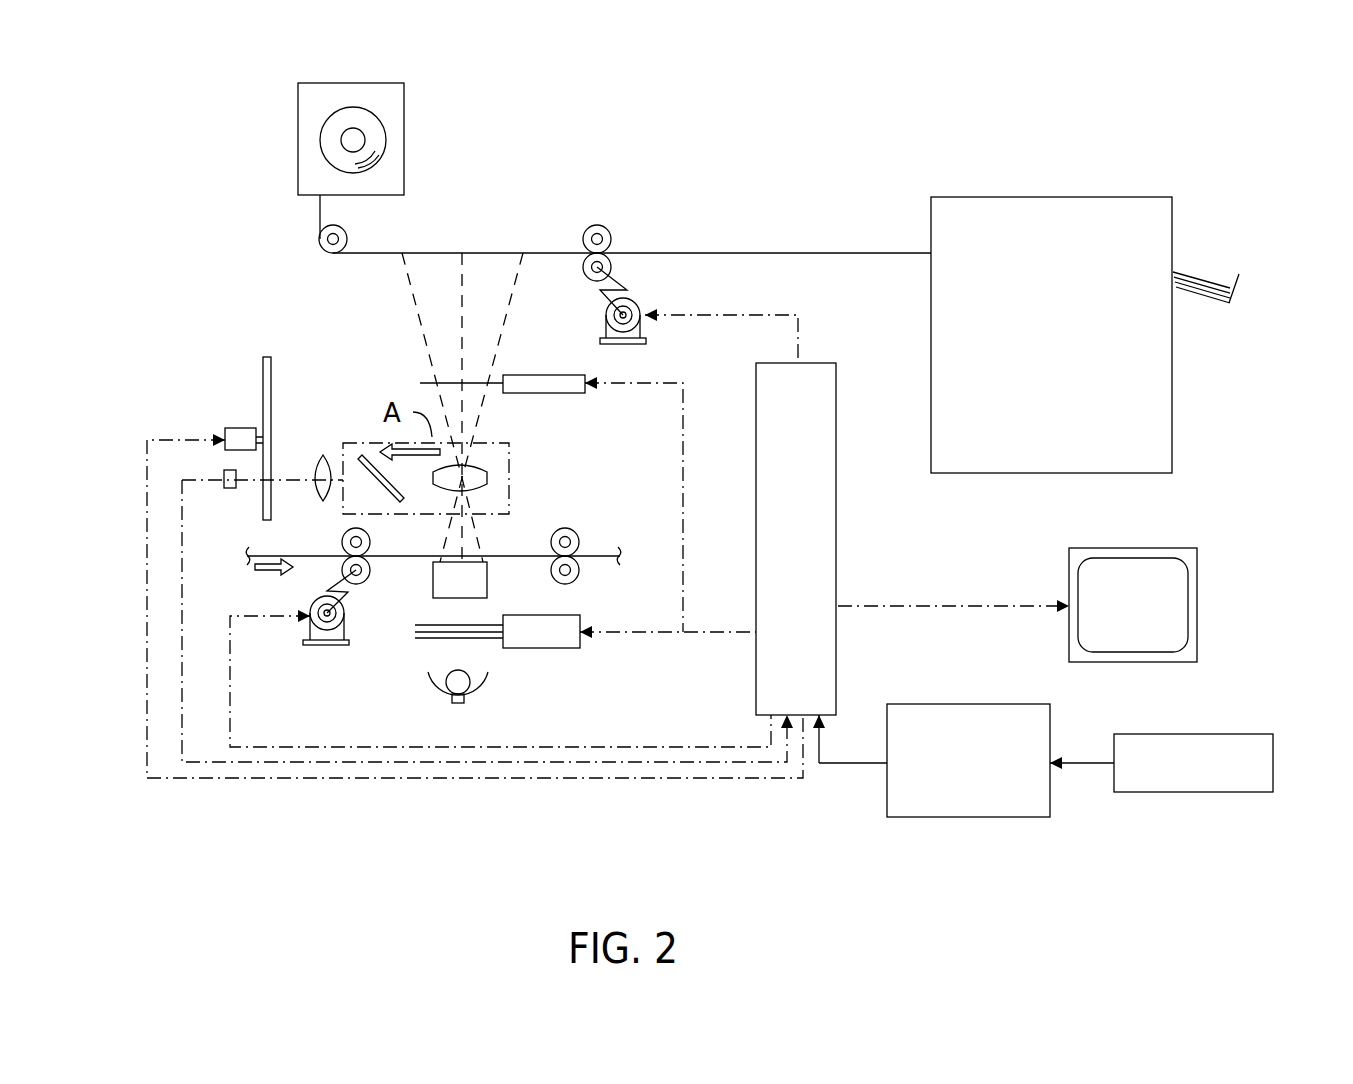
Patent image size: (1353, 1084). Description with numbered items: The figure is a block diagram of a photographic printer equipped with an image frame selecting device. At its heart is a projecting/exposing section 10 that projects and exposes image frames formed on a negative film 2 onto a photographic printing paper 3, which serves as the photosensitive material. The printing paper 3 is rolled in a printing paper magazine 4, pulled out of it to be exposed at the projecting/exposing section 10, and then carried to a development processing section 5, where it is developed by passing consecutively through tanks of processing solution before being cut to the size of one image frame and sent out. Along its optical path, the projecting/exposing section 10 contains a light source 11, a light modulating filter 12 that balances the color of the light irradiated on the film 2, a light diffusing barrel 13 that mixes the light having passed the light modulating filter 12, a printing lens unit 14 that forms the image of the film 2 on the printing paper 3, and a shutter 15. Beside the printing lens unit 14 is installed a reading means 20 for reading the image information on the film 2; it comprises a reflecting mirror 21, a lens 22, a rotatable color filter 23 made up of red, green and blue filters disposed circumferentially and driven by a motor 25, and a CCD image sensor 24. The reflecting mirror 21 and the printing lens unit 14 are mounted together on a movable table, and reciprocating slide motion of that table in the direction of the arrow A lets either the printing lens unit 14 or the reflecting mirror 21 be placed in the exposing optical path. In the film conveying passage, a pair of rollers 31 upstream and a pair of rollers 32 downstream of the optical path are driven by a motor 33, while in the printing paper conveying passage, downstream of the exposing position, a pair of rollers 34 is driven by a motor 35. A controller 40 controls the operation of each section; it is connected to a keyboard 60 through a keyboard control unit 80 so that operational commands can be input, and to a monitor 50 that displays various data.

The negative film 2 is at (322, 555).
The photographic printing paper 3 is at (318, 223).
The printing paper magazine 4 is at (405, 135).
The development processing section 5 is at (978, 197).
The projecting/exposing section 10 is at (400, 657).
The light source 11 is at (485, 685).
The light modulating filter 12 is at (435, 625).
The light diffusing barrel 13 is at (487, 580).
The printing lens unit 14 is at (488, 478).
The shutter 15 is at (503, 383).
The reading means 20 is at (243, 390).
The reflecting mirror 21 is at (362, 455).
The lens 22 is at (323, 458).
The rotatable color filter 23 is at (273, 380).
The CCD image sensor 24 is at (231, 490).
The motor 25 is at (223, 428).
The pair of rollers 31 is at (370, 548).
The pair of rollers 32 is at (572, 527).
The motor 33 is at (322, 645).
The pair of rollers 34 is at (605, 227).
The motor 35 is at (638, 303).
The controller 40 is at (838, 563).
The monitor 50 is at (1170, 548).
The keyboard 60 is at (1230, 734).
The keyboard control unit 80 is at (928, 704).